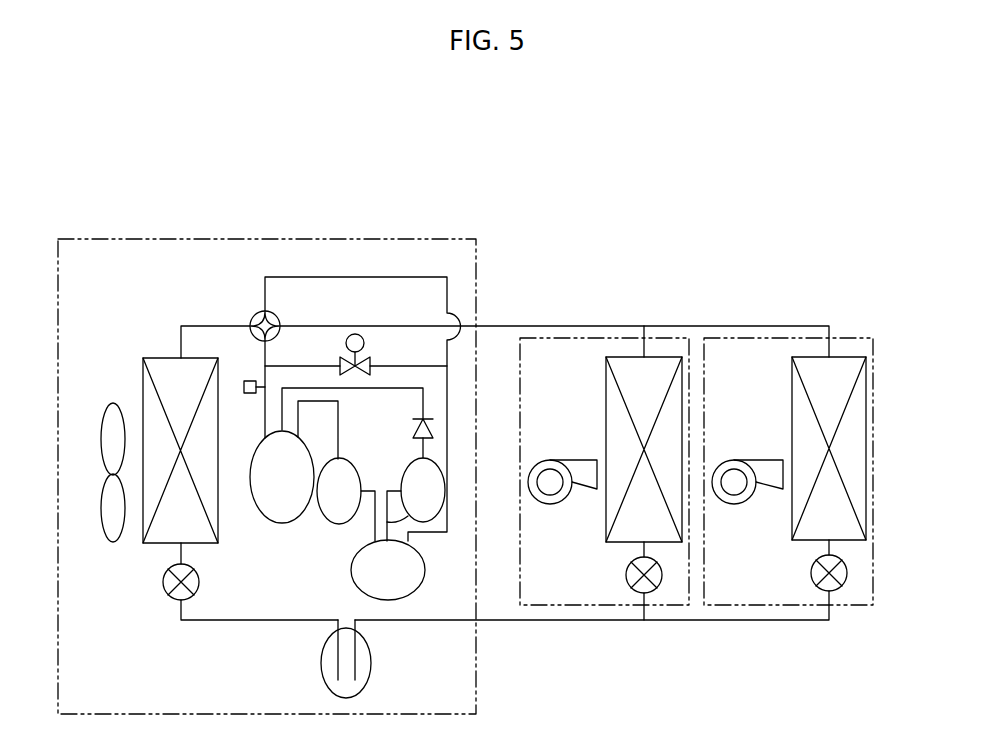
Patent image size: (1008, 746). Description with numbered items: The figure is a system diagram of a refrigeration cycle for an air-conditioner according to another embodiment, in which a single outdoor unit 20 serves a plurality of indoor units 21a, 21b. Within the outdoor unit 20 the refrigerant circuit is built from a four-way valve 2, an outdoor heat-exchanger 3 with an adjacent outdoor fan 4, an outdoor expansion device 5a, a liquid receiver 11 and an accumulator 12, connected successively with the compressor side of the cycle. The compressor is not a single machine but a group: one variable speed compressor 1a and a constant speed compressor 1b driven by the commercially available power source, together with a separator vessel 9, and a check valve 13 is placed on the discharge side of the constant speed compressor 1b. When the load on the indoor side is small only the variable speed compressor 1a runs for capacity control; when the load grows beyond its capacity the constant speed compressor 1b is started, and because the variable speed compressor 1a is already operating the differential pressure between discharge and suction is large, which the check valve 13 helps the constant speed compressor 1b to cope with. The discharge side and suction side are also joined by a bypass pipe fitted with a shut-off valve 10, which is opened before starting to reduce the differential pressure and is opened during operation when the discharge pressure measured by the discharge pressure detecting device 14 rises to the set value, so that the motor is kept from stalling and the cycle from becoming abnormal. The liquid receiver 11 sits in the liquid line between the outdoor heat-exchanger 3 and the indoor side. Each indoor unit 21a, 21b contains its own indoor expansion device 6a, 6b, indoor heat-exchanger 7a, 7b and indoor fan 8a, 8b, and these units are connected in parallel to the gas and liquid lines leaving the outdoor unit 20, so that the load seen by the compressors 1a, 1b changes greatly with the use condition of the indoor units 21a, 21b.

The variable speed compressor 1a is at (323, 522).
The constant speed compressor 1b is at (376, 522).
The four-way valve 2 is at (252, 316).
The outdoor heat-exchanger 3 is at (150, 358).
The outdoor fan 4 is at (108, 403).
The outdoor expansion valve 5a is at (168, 596).
The indoor expansion valve 6a is at (628, 580).
The indoor expansion valve 6b is at (813, 578).
The indoor heat exchanger 7a is at (606, 408).
The indoor heat exchanger 7b is at (792, 408).
The indoor fan 8a is at (566, 460).
The indoor fan 8b is at (751, 460).
The accumulator 9 is at (416, 588).
The shut-off valve 10 is at (362, 336).
The liquid receiver 11 is at (322, 658).
The accumulator 12 is at (270, 522).
The check valve 13 is at (428, 416).
The discharge pressure detecting device 14 is at (248, 381).
The outdoor unit 20 is at (355, 239).
The indoor unit 21a is at (660, 338).
The indoor unit 21b is at (845, 338).